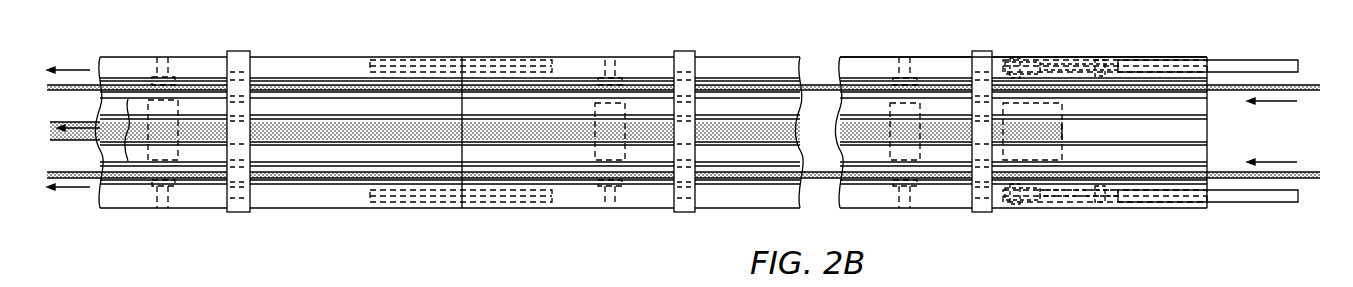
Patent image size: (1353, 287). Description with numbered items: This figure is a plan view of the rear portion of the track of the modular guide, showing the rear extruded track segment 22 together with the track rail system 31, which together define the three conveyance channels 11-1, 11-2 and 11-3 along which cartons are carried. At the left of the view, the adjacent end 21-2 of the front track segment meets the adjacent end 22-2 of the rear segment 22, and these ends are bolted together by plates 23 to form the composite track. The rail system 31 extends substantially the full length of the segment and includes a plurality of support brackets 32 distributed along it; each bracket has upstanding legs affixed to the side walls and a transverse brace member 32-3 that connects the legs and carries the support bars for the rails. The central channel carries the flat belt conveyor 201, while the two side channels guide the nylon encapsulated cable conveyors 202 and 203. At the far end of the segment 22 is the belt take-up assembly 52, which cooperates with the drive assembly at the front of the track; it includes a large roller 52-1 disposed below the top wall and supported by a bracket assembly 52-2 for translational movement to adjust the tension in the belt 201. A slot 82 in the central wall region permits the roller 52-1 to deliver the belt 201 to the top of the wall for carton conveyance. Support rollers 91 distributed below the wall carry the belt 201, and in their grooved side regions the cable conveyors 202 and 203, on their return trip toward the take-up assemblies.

The conveyance channel 11-1 is at (348, 146).
The conveyance channel 11-2 is at (347, 80).
The conveyance channel 11-3 is at (295, 181).
The adjacent end of front track segment 21-2 is at (484, 34).
The rear extruded track segment 22 is at (878, 54).
The adjacent end of rear track segment 22-2 is at (636, 34).
The plates 23 is at (541, 36).
The track rail system 31 is at (757, 108).
The support brackets 32 is at (238, 212).
The transverse brace member 32-3 is at (238, 62).
The belt take-up assembly 52 is at (1066, 62).
The large roller 52-1 is at (1036, 200).
The bracket assembly 52-2 is at (1100, 70).
The slot 82 is at (1116, 195).
The support rollers 91 is at (163, 200).
The flat belt conveyor 201 is at (203, 128).
The nylon encapsulated cable conveyor 202 is at (110, 80).
The nylon encapsulated cable conveyor 203 is at (118, 180).